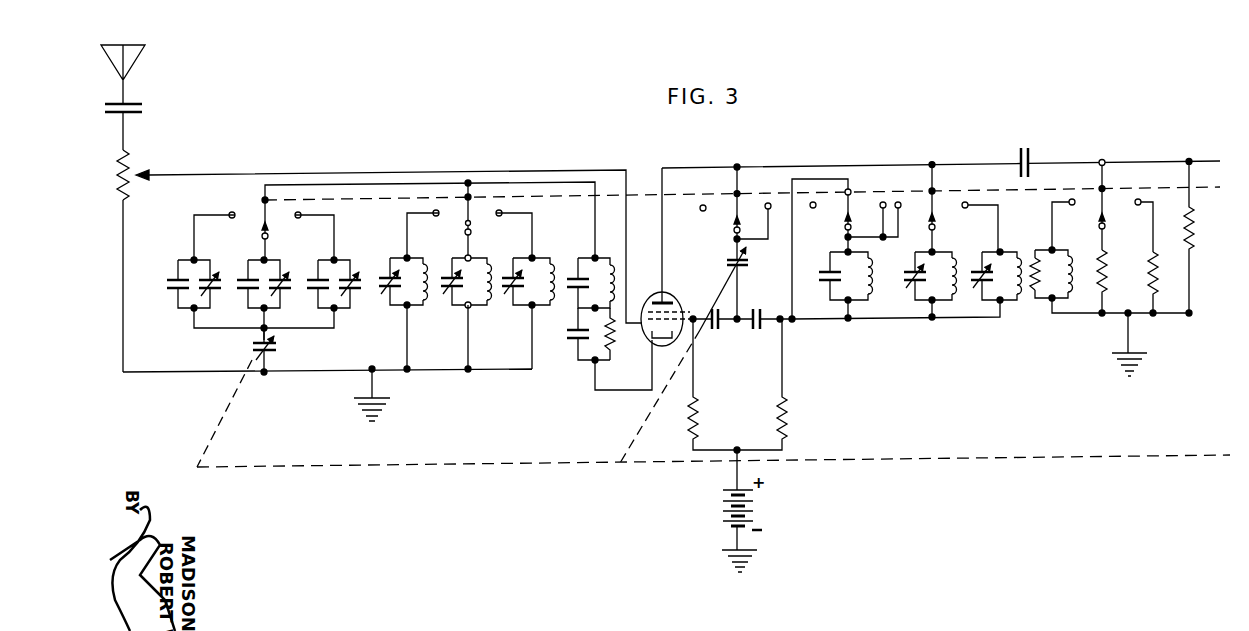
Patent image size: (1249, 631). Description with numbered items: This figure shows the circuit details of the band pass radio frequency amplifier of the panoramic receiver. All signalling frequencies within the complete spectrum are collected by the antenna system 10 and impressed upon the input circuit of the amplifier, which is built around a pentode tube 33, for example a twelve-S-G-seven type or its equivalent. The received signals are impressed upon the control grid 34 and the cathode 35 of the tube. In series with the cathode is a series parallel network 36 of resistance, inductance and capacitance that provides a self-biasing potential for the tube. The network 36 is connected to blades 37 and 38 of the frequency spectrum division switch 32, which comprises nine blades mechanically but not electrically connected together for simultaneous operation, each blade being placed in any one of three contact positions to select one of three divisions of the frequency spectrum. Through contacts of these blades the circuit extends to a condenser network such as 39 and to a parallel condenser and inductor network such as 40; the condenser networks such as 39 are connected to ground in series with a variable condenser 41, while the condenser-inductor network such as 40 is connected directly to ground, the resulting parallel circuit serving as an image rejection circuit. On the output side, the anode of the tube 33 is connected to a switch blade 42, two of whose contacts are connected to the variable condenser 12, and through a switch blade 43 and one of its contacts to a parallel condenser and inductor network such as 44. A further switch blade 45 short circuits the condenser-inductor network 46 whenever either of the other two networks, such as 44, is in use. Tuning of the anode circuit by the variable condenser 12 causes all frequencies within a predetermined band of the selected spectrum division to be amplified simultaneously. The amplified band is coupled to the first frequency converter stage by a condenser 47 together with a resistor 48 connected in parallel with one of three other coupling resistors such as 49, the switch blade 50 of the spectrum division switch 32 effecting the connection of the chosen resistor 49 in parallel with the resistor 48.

The antenna system 10 is at (131, 164).
The variable condenser 12 is at (748, 263).
The frequency spectrum division switch 32 is at (645, 192).
The pentode tube 33 is at (659, 294).
The control grid 34 is at (610, 340).
The cathode 35 is at (652, 360).
The series parallel network 36 is at (591, 283).
The switch blade 37 is at (262, 212).
The switch blade 38 is at (470, 216).
The condenser network 39 is at (258, 300).
The parallel condenser and inductor network 40 is at (466, 303).
The variable condenser 41 is at (278, 347).
The switch blade 42 is at (740, 200).
The switch blade 43 is at (934, 196).
The parallel condenser and inductor network 44 is at (918, 291).
The switch blade 45 is at (850, 196).
The condenser-inductor network 46 is at (833, 291).
The condenser 47 is at (1028, 151).
The resistor 48 is at (1192, 228).
The coupling resistor 49 is at (1103, 284).
The switch blade 50 is at (1104, 196).